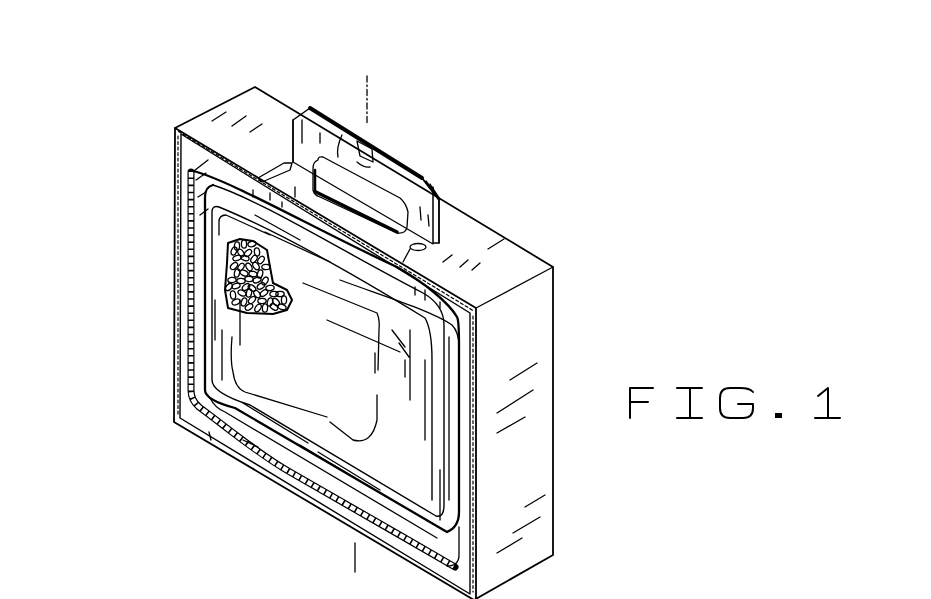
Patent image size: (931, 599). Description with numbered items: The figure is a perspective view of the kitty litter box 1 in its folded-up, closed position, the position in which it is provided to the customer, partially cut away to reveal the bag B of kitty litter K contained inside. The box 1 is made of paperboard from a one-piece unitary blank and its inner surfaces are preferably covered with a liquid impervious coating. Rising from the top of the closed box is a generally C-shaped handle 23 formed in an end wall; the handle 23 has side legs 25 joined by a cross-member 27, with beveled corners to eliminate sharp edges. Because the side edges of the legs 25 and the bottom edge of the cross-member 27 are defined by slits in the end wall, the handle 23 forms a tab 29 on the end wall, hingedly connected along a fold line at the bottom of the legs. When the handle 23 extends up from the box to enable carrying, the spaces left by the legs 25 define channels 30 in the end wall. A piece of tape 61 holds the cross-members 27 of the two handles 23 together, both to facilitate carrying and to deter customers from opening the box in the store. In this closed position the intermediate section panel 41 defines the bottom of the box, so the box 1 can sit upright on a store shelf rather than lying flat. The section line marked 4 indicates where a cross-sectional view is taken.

The kitty litter box 1 is at (565, 236).
The handle 23 is at (396, 152).
The side legs 25 is at (293, 146).
The cross-member 27 is at (358, 131).
The piece of tape 61 is at (412, 172).
The channels 30 is at (258, 177).
The tabs 29 is at (362, 190).
The bag B is at (323, 412).
The kitty litter K is at (228, 263).
The panel 41 is at (250, 443).
The section line 4- 4 is at (367, 76).